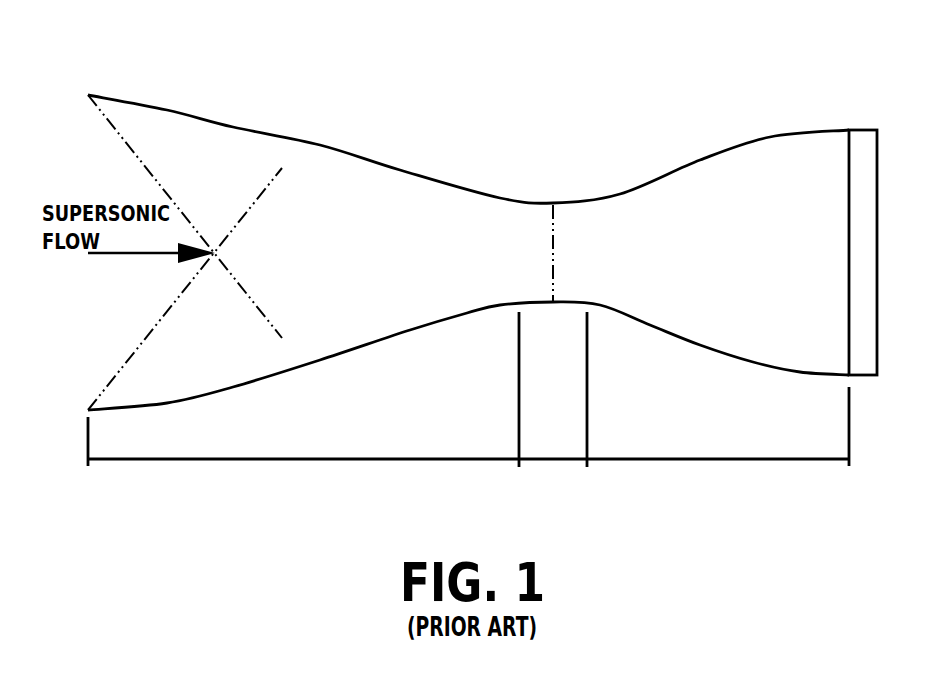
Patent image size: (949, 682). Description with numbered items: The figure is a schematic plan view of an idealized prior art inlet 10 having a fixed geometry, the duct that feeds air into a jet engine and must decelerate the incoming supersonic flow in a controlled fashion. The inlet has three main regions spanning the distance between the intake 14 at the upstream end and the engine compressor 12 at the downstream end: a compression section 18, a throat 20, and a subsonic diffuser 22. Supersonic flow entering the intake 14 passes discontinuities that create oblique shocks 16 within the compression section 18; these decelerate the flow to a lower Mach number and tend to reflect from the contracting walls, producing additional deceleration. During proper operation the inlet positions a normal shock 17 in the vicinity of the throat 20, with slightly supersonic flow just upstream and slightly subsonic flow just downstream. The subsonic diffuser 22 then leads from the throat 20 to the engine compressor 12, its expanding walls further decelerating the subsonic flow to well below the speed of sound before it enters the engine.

The prior art inlet 10 is at (481, 308).
The engine compressor 12 is at (893, 214).
The intake 14 is at (468, 180).
The oblique shocks 16 is at (437, 289).
The normal shock 17 is at (589, 209).
The compression section 18 is at (303, 459).
The throat 20 is at (533, 417).
The subsonic diffuser 22 is at (718, 453).